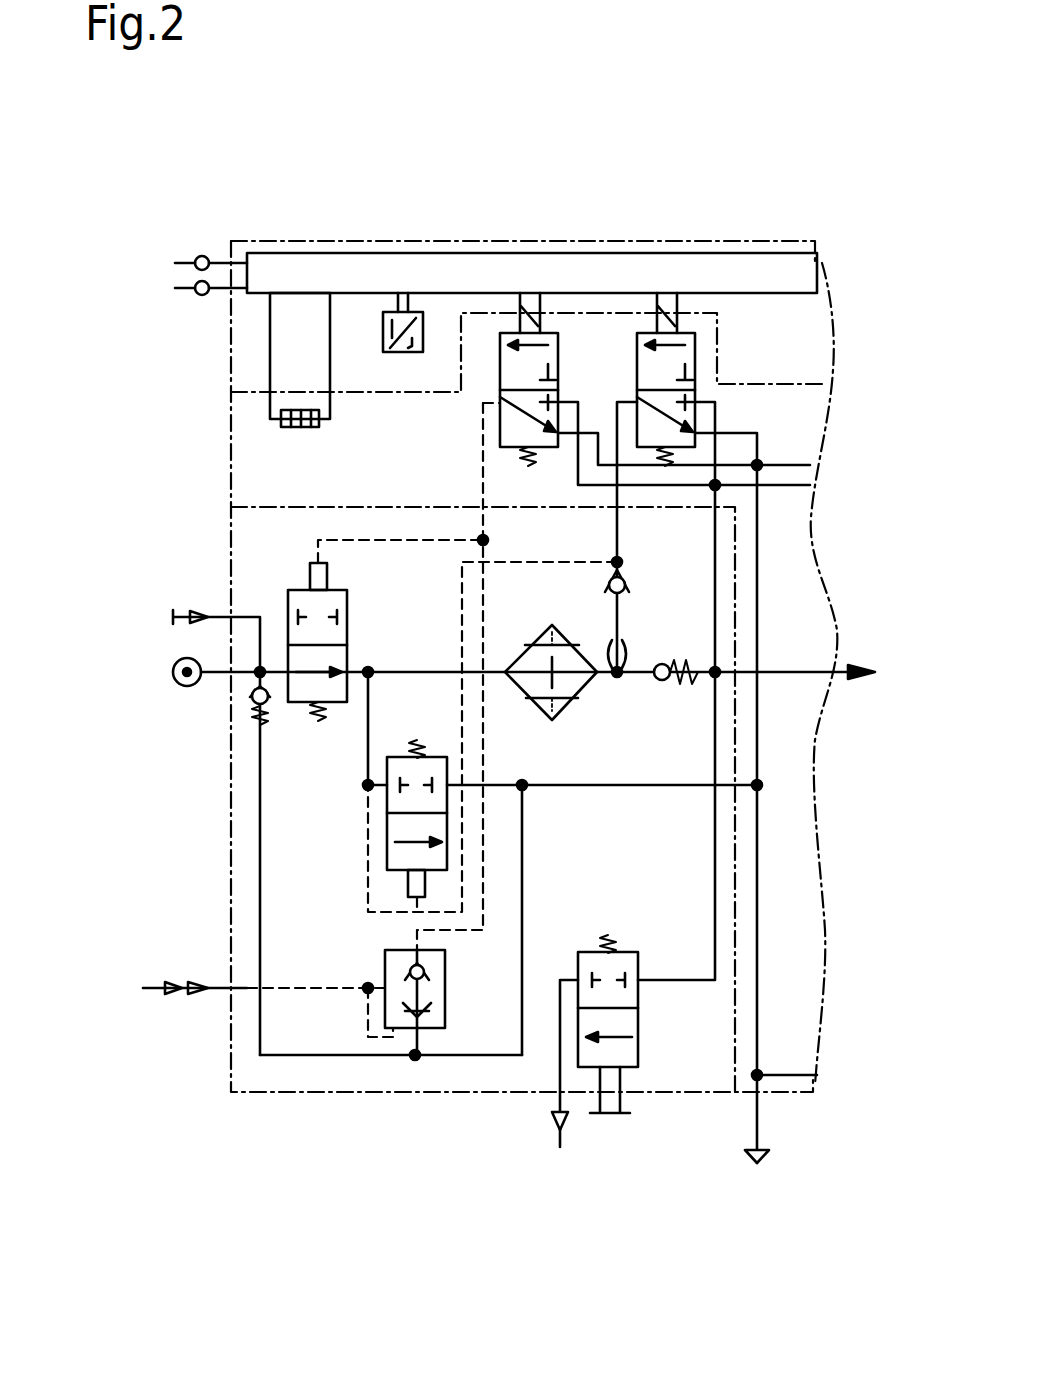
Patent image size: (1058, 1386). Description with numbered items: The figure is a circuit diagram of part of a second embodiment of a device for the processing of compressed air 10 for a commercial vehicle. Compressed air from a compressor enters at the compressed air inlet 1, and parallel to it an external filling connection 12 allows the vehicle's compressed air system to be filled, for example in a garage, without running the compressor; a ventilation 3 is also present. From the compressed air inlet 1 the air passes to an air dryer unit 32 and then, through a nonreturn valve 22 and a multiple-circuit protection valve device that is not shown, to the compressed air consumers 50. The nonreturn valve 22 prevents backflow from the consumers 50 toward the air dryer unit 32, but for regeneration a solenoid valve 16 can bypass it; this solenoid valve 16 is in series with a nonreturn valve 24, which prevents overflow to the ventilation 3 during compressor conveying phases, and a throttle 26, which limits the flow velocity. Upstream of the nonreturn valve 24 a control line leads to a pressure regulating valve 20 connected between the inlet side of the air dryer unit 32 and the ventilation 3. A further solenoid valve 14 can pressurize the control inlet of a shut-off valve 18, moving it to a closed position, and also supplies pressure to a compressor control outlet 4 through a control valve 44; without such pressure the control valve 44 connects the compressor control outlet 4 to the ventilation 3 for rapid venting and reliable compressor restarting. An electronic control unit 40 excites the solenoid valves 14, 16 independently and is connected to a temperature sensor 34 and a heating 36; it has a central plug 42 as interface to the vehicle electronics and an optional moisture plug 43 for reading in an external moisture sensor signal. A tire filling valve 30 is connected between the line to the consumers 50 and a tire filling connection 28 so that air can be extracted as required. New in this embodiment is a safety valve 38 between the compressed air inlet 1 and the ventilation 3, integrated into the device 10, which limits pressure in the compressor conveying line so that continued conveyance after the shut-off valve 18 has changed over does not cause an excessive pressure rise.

The compressed air inlet 1 is at (160, 675).
The ventilation 3 is at (767, 1162).
The compressor control outlet 4 is at (165, 993).
The device for the processing of compressed air 10 is at (250, 1186).
The external filling connection 12 is at (158, 617).
The solenoid valve 14 is at (557, 330).
The solenoid valve 16 is at (690, 330).
The shut-off valve 18 is at (350, 625).
The pressure regulating valve 20 is at (383, 797).
The nonreturn valve 22 is at (680, 657).
The nonreturn valve 24 is at (640, 580).
The throttle 26 is at (637, 648).
The tire filling connection 28 is at (552, 1132).
The tire filling valve 30 is at (637, 1080).
The air dryer unit 32 is at (580, 700).
The temperature sensor 34 is at (403, 352).
The heating 36 is at (283, 430).
The safety valve 38 is at (272, 722).
The electronic control unit 40 is at (313, 253).
The central plug 42 is at (192, 255).
The moisture plug 43 is at (193, 296).
The control valve 44 is at (402, 1060).
The compressed air consumers 50 is at (886, 669).